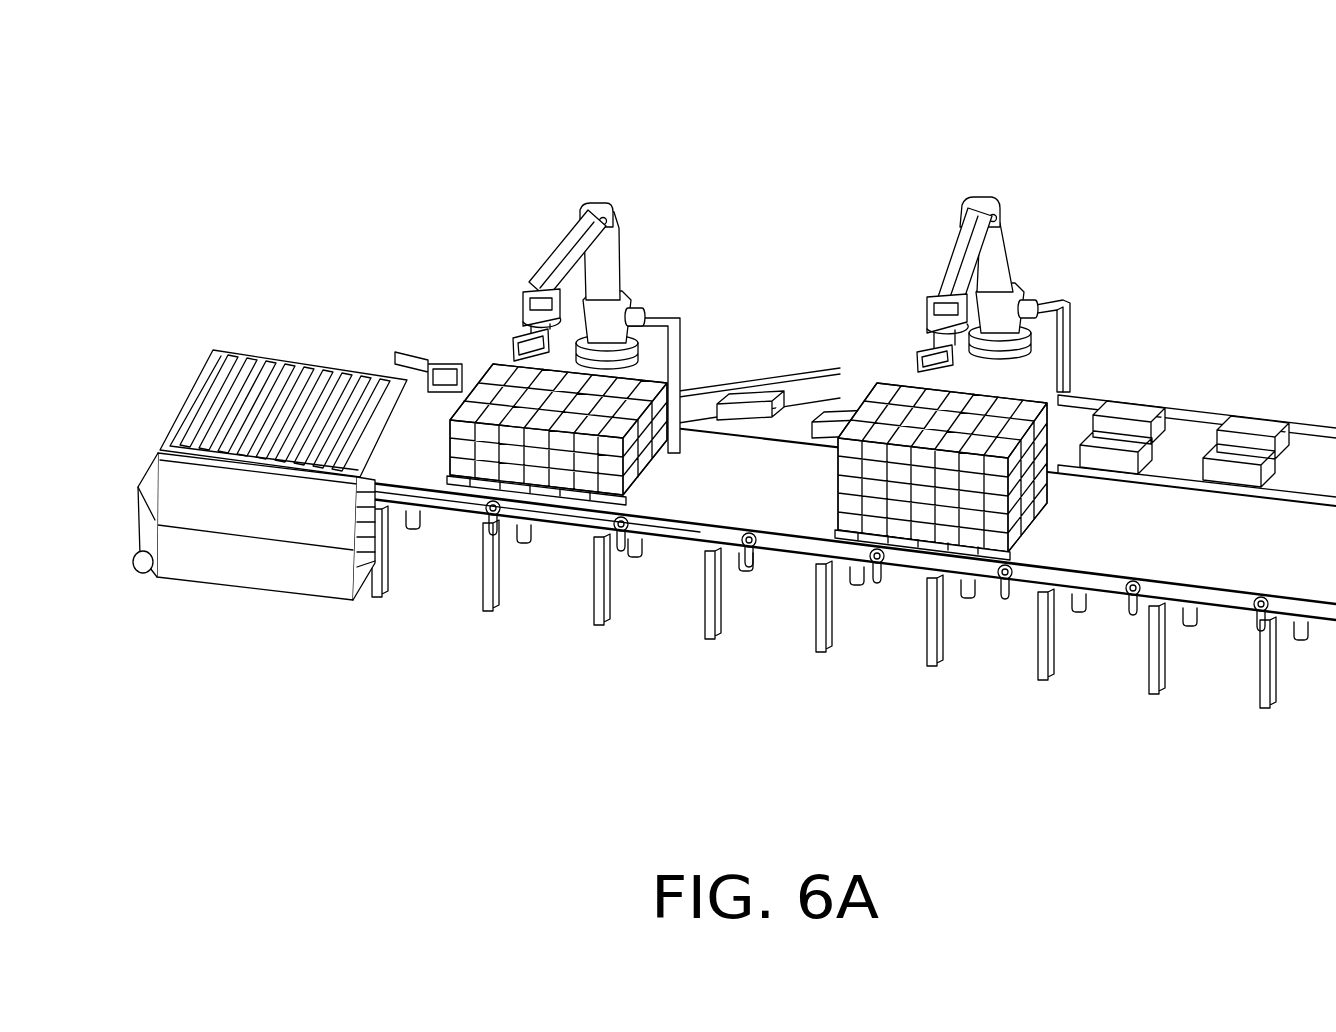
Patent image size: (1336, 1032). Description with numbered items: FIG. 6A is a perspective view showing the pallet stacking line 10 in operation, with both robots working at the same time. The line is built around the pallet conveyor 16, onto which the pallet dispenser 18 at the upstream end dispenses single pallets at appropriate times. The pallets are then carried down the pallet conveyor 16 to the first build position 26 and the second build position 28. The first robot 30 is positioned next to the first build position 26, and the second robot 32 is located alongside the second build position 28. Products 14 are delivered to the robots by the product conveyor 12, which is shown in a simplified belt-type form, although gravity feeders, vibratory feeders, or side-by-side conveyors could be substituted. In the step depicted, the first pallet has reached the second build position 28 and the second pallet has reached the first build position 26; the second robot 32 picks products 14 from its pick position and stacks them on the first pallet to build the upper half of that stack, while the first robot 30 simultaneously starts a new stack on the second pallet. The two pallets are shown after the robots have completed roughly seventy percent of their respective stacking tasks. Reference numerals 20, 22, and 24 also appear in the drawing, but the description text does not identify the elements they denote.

The palletizing system 10 is at (793, 256).
The infeed conveyor 12 is at (1300, 453).
The pallet load 14 is at (460, 417).
The pallet conveyor 16 is at (1128, 540).
The pallet dispenser 18 is at (270, 503).
The pallet 20 is at (525, 493).
The frame 22 is at (443, 383).
The cases on infeed conveyor 24 is at (1072, 423).
The cases on first pallet load 26 is at (537, 447).
The cases on second pallet load 28 is at (922, 499).
The first robot 30 is at (563, 243).
The second robot 32 is at (967, 250).